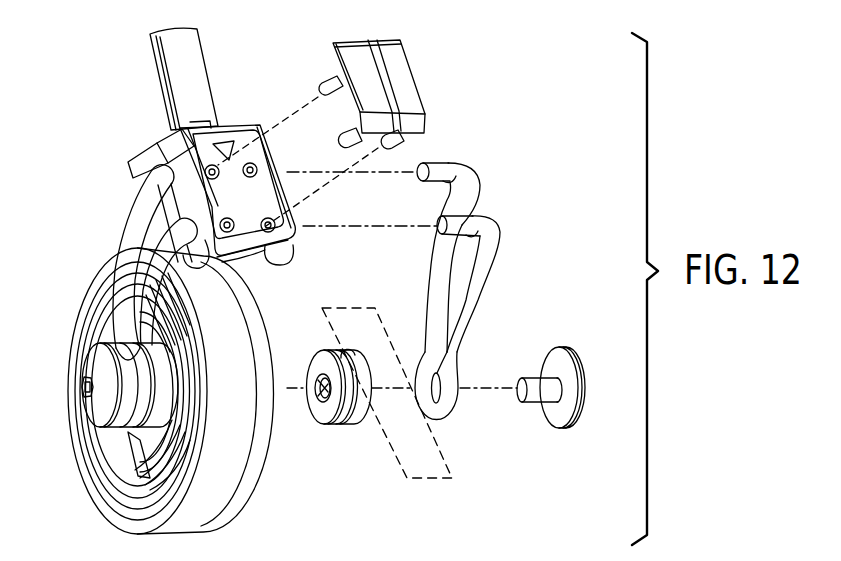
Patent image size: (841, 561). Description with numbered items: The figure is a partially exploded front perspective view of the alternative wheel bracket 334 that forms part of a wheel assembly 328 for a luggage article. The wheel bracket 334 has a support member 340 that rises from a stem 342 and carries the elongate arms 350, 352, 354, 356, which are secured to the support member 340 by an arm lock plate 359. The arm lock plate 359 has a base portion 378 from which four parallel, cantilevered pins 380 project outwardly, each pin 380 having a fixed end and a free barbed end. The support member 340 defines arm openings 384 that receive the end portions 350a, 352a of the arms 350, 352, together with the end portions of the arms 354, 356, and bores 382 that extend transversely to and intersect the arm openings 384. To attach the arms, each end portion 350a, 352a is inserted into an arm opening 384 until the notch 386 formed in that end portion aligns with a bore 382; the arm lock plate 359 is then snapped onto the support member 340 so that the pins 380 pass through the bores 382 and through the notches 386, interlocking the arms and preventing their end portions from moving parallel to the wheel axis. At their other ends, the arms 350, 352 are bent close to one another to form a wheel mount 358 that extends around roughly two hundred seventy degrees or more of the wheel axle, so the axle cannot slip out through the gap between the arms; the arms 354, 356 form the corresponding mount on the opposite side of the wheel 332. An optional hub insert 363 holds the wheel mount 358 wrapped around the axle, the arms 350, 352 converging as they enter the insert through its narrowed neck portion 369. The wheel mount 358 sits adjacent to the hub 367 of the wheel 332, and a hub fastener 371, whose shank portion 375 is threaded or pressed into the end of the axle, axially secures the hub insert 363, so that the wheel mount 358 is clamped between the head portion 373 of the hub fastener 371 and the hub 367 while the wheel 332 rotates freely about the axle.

The wheel assembly 328 is at (523, 76).
The wheel 332 is at (68, 353).
The wheel bracket 334 is at (104, 88).
The support member 340 is at (145, 150).
The stem 342 is at (212, 80).
The elongate arm 350 is at (483, 230).
The end portion 350a is at (433, 163).
The elongate arm 352 is at (500, 261).
The end portion 352a is at (478, 207).
The elongate arm 354 is at (133, 210).
The elongate arm 356 is at (153, 277).
The wheel mount 358 is at (452, 407).
The arm lock plate 359 is at (406, 70).
The hub insert 363 is at (120, 425).
The hub 367 is at (137, 477).
The narrowed neck portion 369 is at (352, 358).
The hub fastener 371 is at (87, 412).
The head portion 373 is at (563, 415).
The shank portion 375 is at (537, 376).
The base portion 378 is at (408, 88).
The pin 380 is at (330, 78).
The bore 382 is at (252, 166).
The arm opening 384 is at (173, 133).
The notch 386 is at (460, 164).